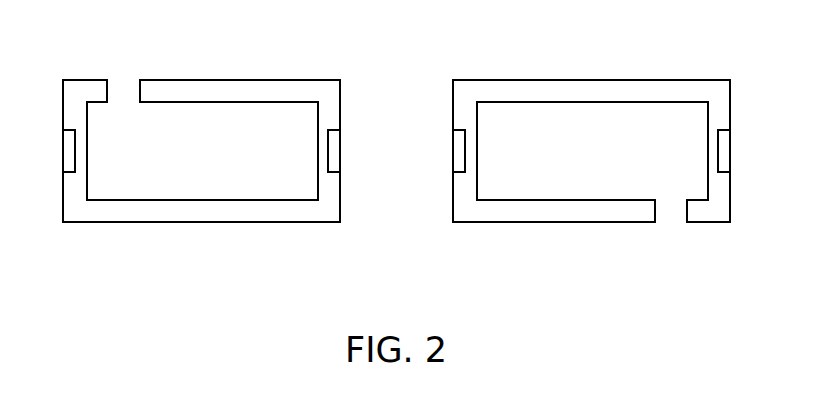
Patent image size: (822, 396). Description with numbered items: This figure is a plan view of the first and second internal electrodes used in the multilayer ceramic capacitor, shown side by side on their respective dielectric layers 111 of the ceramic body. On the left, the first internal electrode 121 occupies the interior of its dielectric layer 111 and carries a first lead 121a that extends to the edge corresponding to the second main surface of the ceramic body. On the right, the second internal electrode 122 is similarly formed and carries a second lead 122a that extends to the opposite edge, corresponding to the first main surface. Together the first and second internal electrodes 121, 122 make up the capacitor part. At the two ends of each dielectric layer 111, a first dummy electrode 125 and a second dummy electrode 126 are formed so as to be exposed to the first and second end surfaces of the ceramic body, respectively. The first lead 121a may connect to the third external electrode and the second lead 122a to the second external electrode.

The dielectric layer 111 is at (327, 93).
The first internal electrode 121 is at (202, 178).
The first lead 121a is at (122, 95).
The second internal electrode 122 is at (592, 178).
The second lead 122a is at (668, 208).
The first dummy electrode 125 is at (70, 152).
The second dummy electrode 126 is at (335, 152).